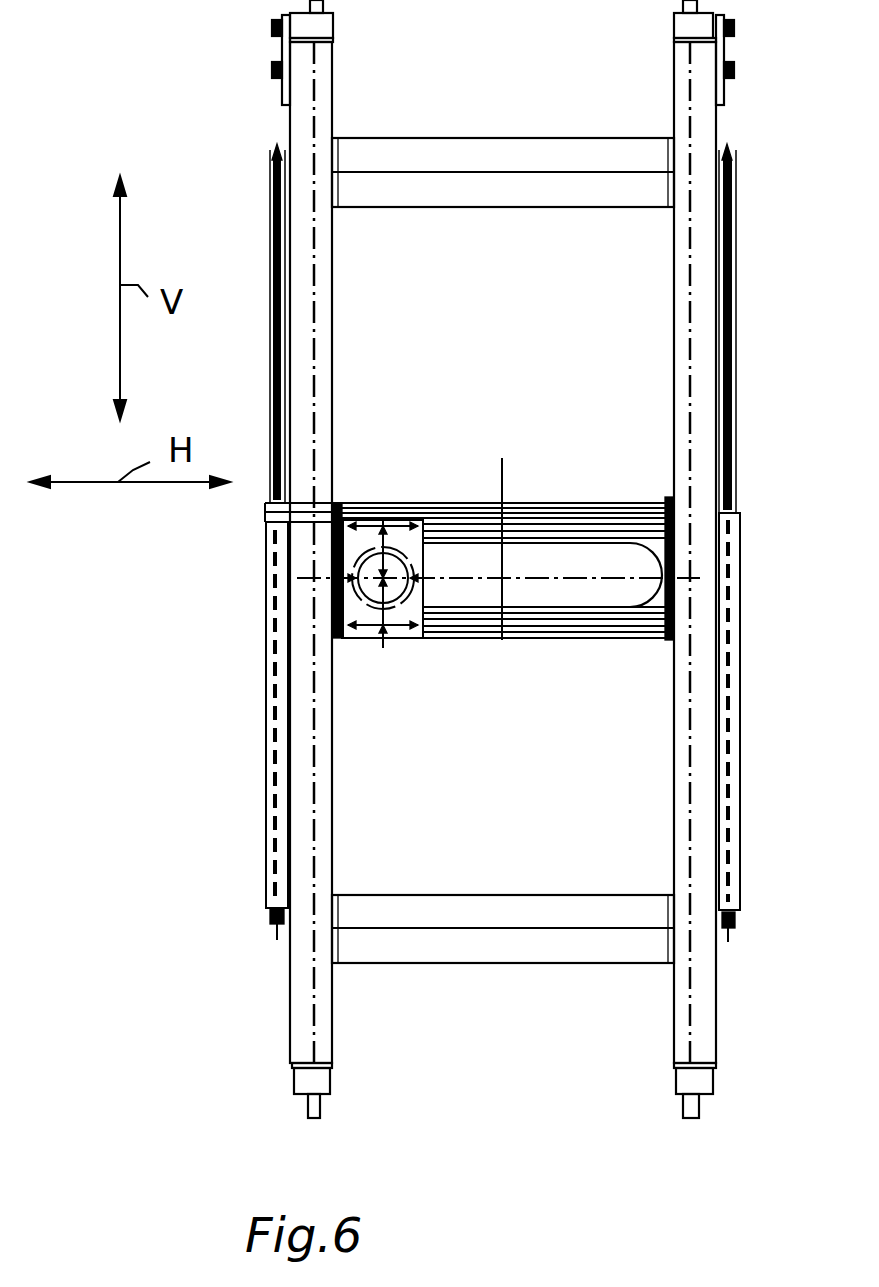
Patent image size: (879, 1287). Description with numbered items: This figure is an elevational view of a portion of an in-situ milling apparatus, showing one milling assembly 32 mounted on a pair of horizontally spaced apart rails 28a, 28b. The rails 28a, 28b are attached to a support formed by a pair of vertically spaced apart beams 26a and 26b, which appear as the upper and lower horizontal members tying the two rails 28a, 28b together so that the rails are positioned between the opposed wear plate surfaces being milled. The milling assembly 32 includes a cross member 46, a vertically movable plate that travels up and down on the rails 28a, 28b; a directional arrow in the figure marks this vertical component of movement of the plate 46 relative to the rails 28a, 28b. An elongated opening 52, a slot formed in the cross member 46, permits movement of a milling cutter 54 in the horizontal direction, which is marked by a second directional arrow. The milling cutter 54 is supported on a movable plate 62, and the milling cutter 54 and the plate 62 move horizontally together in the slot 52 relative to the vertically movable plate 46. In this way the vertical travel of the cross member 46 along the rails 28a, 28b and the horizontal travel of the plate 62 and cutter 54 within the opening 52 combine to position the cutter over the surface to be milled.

The beam 26a is at (375, 140).
The beam 26b is at (412, 965).
The rail 28a is at (290, 126).
The rail 28b is at (720, 128).
The milling assembly 32 is at (382, 498).
The cross member 46 is at (656, 600).
The elongated opening 52 is at (548, 540).
The milling cutter 54 is at (408, 603).
The movable plate 62 is at (357, 615).